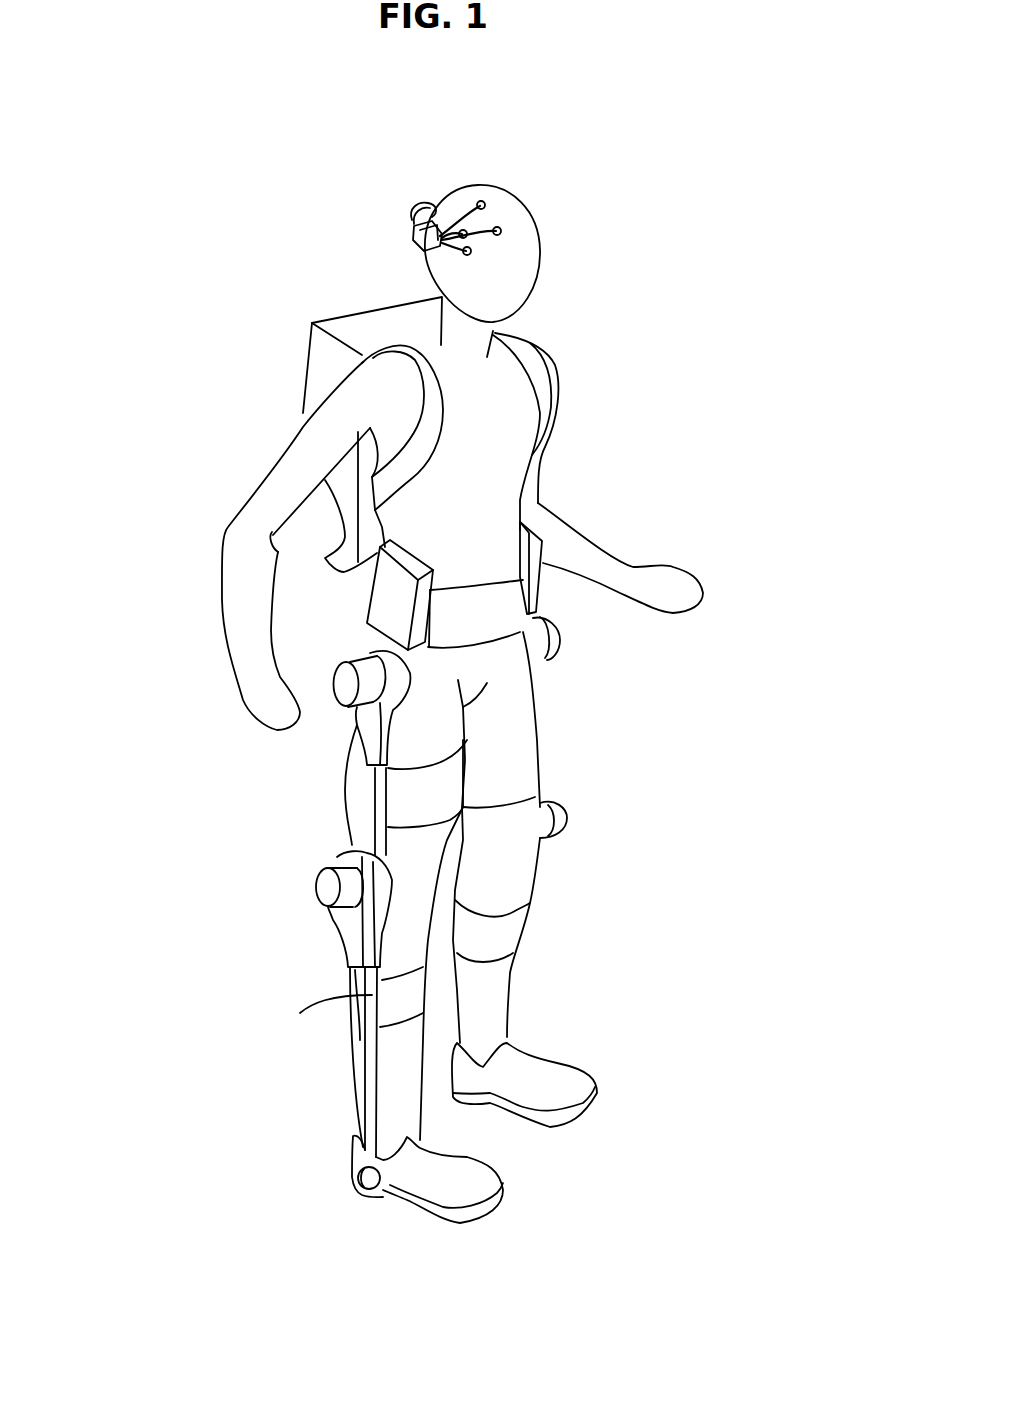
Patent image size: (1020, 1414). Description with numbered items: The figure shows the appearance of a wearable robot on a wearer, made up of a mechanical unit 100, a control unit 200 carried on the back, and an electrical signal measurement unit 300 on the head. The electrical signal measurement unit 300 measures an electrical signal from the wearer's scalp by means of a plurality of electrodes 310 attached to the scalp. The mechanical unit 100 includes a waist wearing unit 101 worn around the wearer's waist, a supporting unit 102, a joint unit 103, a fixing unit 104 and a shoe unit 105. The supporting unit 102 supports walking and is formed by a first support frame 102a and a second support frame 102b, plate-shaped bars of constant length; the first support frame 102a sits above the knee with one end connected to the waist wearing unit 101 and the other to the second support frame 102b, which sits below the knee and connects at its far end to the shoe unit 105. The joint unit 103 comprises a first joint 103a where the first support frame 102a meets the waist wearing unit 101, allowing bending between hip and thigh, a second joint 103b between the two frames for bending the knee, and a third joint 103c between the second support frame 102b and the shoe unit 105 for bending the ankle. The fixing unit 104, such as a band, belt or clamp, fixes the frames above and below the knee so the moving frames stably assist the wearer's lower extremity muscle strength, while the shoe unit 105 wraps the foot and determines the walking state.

The mechanical unit 100 is at (188, 733).
The waist wearing unit 101 is at (520, 600).
The supporting unit 102 is at (277, 836).
The first support frame 102a is at (365, 808).
The second support frame 102b is at (223, 840).
The joint unit 103 is at (552, 920).
The first joint 103a is at (393, 705).
The second joint 103b is at (380, 880).
The third joint 103c is at (382, 1177).
The fixing unit 104 is at (358, 790).
The shoe unit 105 is at (383, 1195).
The control unit 200 is at (320, 358).
The electrical signal measurement unit 300 is at (409, 186).
The electrodes 310 is at (480, 202).